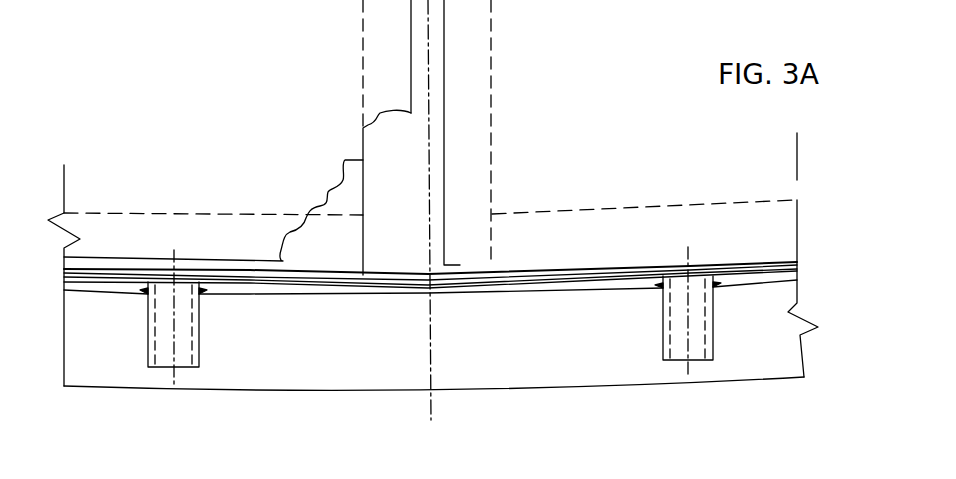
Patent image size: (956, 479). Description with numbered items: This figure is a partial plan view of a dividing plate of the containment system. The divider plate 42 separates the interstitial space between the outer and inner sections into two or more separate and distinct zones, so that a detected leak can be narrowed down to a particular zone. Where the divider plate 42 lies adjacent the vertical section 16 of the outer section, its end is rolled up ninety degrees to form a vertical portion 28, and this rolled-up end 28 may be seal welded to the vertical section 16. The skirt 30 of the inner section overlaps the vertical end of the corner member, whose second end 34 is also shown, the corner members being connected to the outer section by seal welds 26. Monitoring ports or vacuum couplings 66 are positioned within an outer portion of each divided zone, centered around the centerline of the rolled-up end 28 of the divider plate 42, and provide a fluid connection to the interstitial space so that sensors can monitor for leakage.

The vertical section 16 is at (575, 292).
The seal weld 26 is at (342, 185).
The vertical portion 28 is at (430, 272).
The skirt 30 is at (593, 262).
The second end 34 is at (139, 225).
The divider plate 42 is at (395, 177).
The monitoring port 66 is at (150, 369).